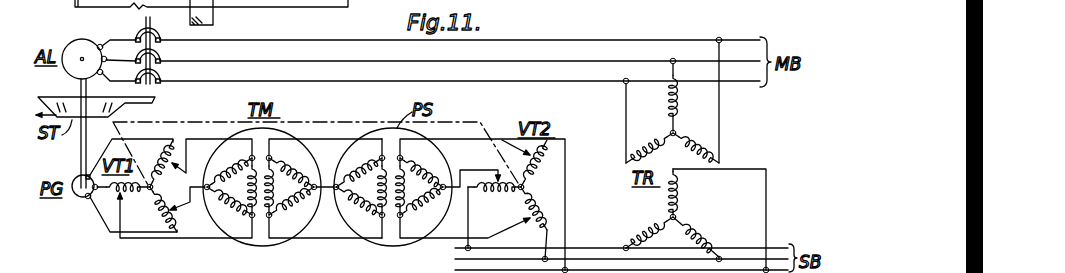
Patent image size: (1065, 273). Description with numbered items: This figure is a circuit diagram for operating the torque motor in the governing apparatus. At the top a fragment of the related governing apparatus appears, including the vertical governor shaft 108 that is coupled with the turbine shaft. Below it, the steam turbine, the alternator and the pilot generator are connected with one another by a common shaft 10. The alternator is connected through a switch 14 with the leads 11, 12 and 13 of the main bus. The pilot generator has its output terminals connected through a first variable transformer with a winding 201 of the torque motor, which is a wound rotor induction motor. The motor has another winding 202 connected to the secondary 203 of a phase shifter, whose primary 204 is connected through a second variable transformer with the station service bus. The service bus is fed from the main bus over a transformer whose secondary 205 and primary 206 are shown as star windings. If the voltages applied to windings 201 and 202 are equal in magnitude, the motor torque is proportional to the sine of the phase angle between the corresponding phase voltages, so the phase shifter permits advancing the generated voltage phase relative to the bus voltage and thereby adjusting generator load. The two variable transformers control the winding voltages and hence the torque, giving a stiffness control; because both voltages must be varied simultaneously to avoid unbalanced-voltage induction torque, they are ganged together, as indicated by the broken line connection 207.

The common shaft 10 is at (79, 152).
The lead of main bus 11 is at (247, 42).
The lead of main bus 12 is at (240, 63).
The lead of main bus 13 is at (235, 83).
The switch 14 is at (160, 43).
The vertical governor shaft 108 is at (207, 8).
The winding of torque motor 201 is at (241, 214).
The winding of torque motor 202 is at (284, 208).
The secondary of phase shifter 203 is at (366, 213).
The primary of phase shifter 204 is at (405, 215).
The secondary of transformer 205 is at (676, 215).
The primary of transformer 206 is at (676, 133).
The broken line connection 207 is at (326, 122).